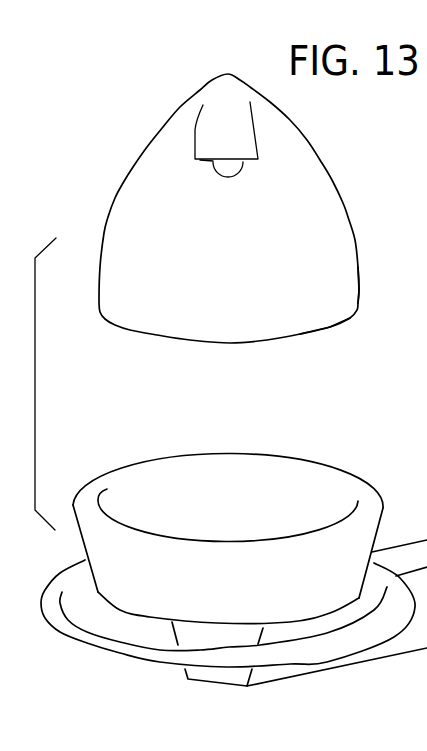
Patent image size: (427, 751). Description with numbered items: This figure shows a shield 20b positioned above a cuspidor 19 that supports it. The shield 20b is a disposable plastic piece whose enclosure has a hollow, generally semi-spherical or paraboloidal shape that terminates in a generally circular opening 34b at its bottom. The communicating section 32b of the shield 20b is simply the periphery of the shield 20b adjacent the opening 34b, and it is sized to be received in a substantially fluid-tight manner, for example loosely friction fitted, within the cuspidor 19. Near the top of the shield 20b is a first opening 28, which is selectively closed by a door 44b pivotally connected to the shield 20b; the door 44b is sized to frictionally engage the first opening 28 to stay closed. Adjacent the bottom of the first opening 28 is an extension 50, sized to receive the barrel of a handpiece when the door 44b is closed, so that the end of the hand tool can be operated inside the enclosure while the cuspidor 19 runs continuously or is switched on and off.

The shield 20b is at (116, 170).
The door 44b is at (238, 133).
The first opening 28 is at (203, 171).
The extension 50 is at (237, 175).
The communicating section 32b is at (360, 300).
The circular opening 34b is at (317, 333).
The cuspidor 19 is at (347, 482).